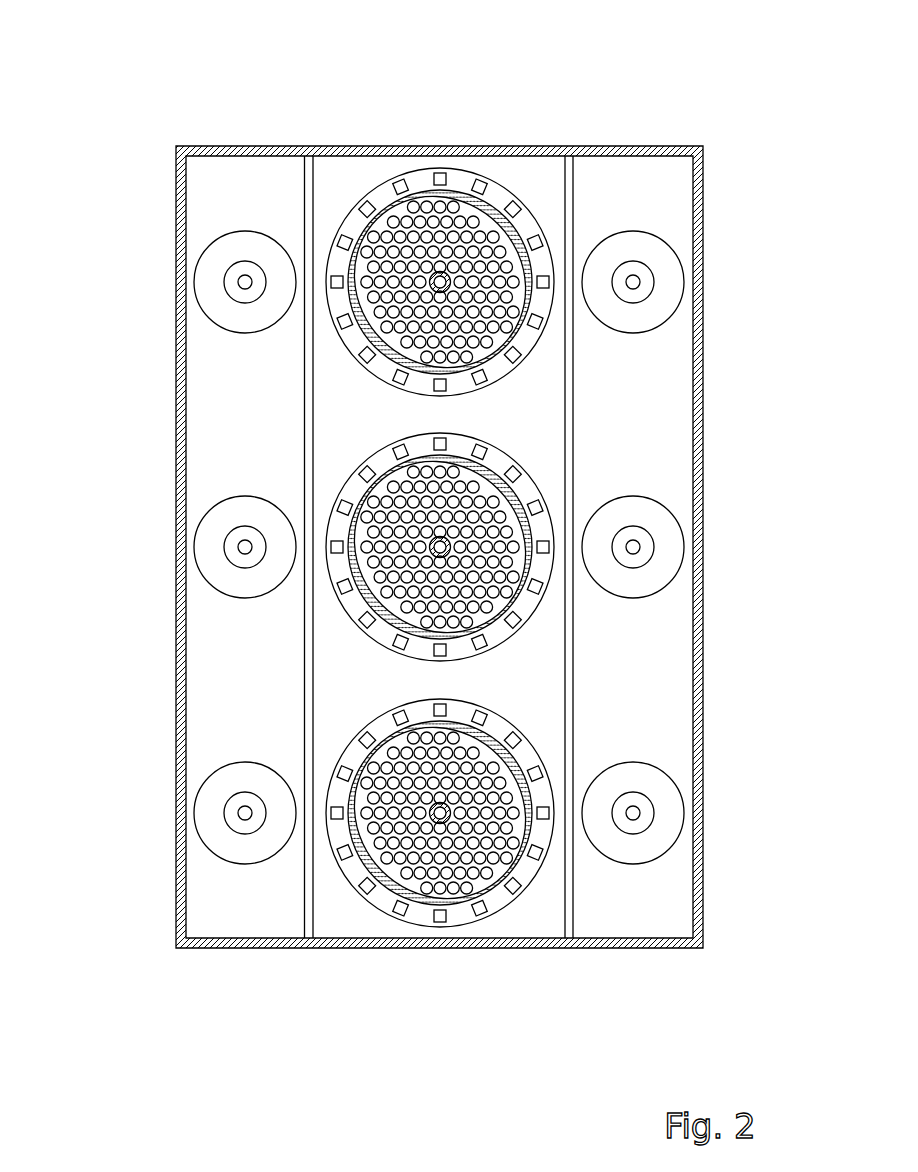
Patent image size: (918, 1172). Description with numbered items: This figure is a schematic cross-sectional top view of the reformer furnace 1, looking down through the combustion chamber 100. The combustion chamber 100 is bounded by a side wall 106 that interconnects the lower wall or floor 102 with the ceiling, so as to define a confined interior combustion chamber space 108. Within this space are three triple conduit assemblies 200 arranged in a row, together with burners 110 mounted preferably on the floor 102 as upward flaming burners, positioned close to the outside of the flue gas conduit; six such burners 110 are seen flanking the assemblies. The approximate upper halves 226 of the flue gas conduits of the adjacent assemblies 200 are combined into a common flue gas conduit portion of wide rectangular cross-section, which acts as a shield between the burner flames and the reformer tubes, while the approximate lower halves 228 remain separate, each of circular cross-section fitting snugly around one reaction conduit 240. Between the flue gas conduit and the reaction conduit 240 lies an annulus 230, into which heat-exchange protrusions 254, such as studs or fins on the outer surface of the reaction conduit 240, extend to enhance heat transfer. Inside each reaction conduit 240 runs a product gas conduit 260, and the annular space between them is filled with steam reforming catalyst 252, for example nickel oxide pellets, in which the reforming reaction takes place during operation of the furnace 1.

The reformer furnace 1 is at (715, 120).
The combustion chamber 100 is at (448, 120).
The lower wall or floor 102 is at (220, 461).
The side wall 106 is at (377, 152).
The combustion chamber space 108 is at (265, 395).
The burner 110 is at (210, 282).
The triple conduit assembly 200 is at (348, 955).
The approximate upper half of the flue gas conduit 226 is at (309, 178).
The approximate lower half of the flue gas conduit 228 is at (412, 928).
The annulus 230 is at (370, 425).
The reaction conduit 240 is at (490, 740).
The steam reforming catalyst 252 is at (447, 888).
The protrusions 254 is at (400, 722).
The product gas conduit 260 is at (497, 885).